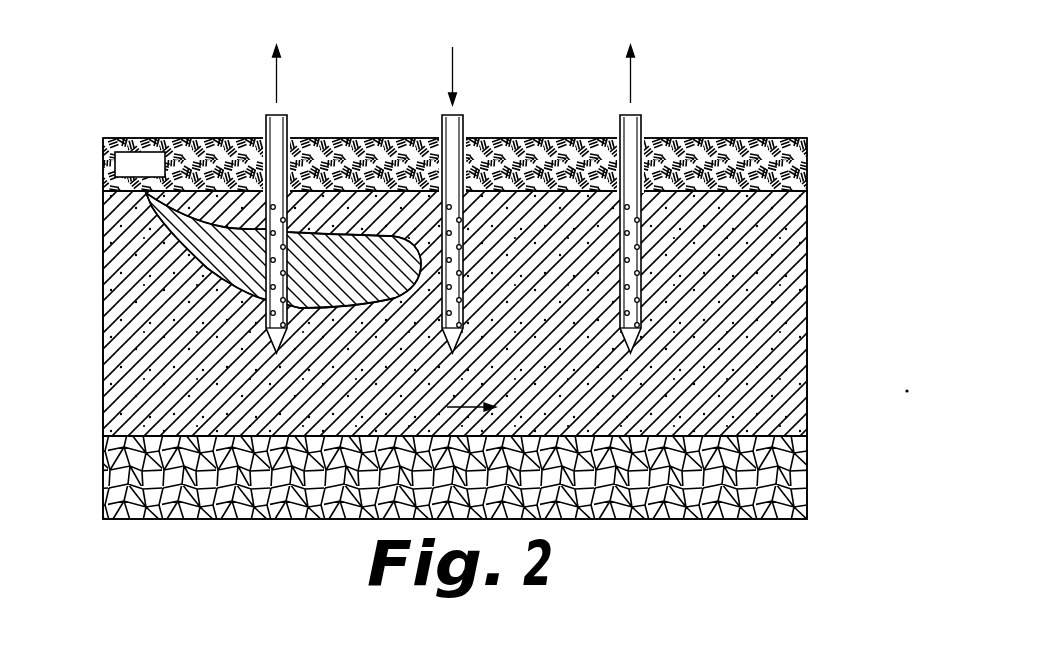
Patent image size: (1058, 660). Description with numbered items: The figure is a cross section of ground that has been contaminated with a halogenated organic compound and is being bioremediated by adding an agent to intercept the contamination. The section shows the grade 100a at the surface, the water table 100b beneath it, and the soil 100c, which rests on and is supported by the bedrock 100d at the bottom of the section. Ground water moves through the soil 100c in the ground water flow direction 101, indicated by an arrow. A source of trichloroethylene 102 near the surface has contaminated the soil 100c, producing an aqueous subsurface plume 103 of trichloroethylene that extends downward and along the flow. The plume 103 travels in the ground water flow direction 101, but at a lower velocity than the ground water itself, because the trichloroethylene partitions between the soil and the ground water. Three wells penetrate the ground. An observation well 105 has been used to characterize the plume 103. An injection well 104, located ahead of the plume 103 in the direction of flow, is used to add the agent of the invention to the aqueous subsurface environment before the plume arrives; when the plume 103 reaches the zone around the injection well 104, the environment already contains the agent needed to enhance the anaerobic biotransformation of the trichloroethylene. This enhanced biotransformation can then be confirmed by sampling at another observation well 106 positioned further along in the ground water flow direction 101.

The grade 100a is at (817, 108).
The water table 100b is at (775, 192).
The soil 100c is at (210, 397).
The bedrock 100d is at (808, 458).
The ground water flow direction 101 is at (440, 410).
The source of trichloroethylene 102 is at (147, 162).
The aqueous subsurface plume 103 is at (385, 235).
The injection well 104 is at (464, 158).
The observation well 105 is at (288, 127).
The observation well 106 is at (641, 125).